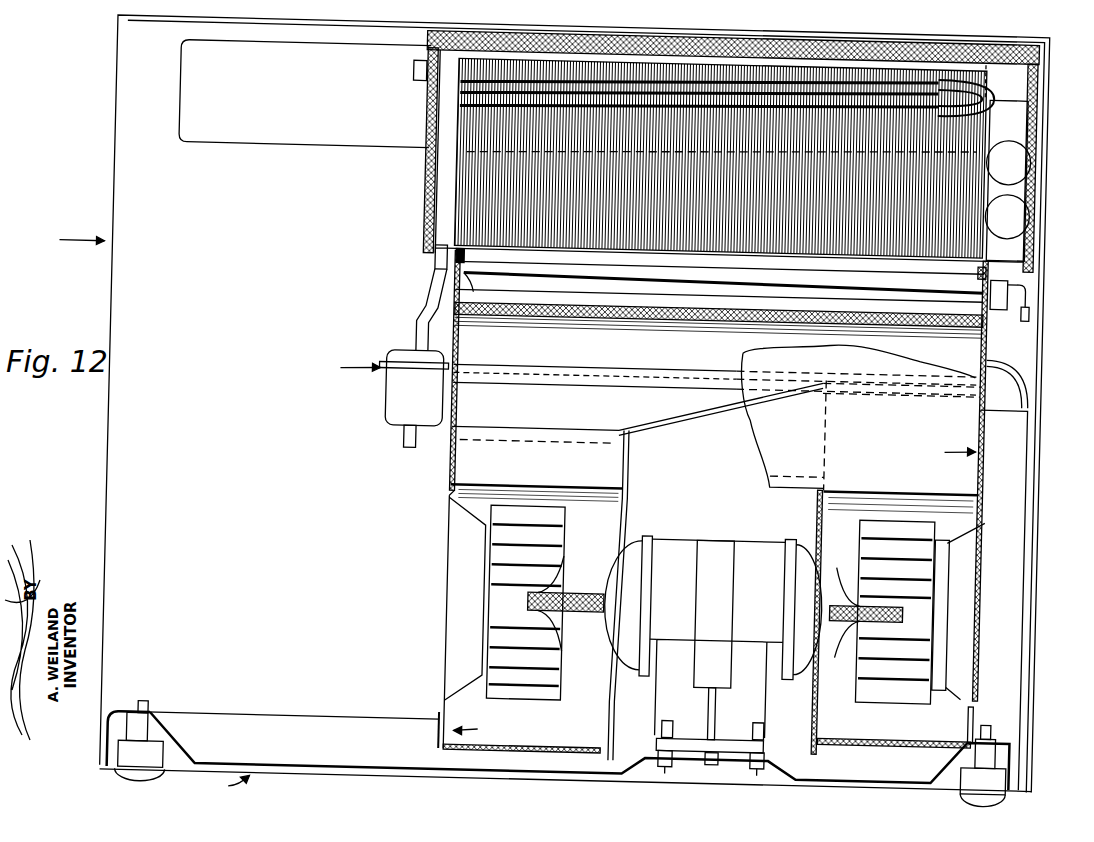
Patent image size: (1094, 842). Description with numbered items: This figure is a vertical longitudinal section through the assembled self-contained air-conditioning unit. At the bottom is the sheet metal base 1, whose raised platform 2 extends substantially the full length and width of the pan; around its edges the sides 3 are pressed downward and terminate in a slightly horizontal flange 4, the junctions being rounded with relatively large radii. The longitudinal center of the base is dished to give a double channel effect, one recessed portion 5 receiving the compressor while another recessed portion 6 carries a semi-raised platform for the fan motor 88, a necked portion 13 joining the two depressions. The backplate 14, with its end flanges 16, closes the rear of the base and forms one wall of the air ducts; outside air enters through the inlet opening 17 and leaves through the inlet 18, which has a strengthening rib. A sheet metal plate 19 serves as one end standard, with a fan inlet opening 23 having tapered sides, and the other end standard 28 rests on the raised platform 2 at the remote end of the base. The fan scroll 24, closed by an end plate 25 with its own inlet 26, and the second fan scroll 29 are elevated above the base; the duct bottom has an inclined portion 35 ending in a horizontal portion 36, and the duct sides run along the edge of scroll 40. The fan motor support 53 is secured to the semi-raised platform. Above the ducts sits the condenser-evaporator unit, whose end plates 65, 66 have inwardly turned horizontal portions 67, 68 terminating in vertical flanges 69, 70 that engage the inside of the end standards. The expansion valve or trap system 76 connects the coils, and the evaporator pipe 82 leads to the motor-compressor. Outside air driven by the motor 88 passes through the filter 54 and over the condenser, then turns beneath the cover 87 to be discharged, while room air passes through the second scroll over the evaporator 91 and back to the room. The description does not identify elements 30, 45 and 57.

The base 1 is at (232, 784).
The raised platform 2 is at (315, 708).
The sides 3 is at (137, 712).
The horizontal flange 4 is at (133, 760).
The recessed portion 5 is at (265, 757).
The recessed portion 6 is at (558, 760).
The necked portion 13 is at (425, 728).
The backplate 14 is at (65, 241).
The end flanges 16 is at (117, 196).
The inlet opening 17 is at (182, 121).
The inlet 18 is at (832, 140).
The sheet metal plate 19 is at (472, 723).
The fan inlet opening 23 is at (461, 664).
The fan scroll 24 is at (576, 734).
The end plate 25 is at (621, 733).
The inlet 26 is at (631, 668).
The end standard 28 is at (977, 408).
The fan scroll 29 is at (888, 727).
The fan housing wall 30 is at (835, 701).
The inclined portion 35 is at (690, 414).
The horizontal portion 36 is at (869, 372).
The edge of scroll 40 is at (555, 429).
The cover 45 is at (794, 446).
The fan motor support 53 is at (769, 697).
The filter 54 is at (910, 305).
The header tube 57 is at (862, 279).
The end plate 65 is at (1037, 165).
The end plate 66 is at (430, 172).
The inwardly turned horizontal portion 67 is at (1034, 265).
The inwardly turned horizontal portion 68 is at (441, 250).
The vertical flange 69 is at (984, 253).
The vertical flange 70 is at (471, 252).
The expansion valve or trap system 76 is at (382, 398).
The evaporator pipe 82 is at (415, 70).
The cover 87 is at (788, 744).
The motor 88 is at (782, 537).
The evaporator 91 is at (445, 190).